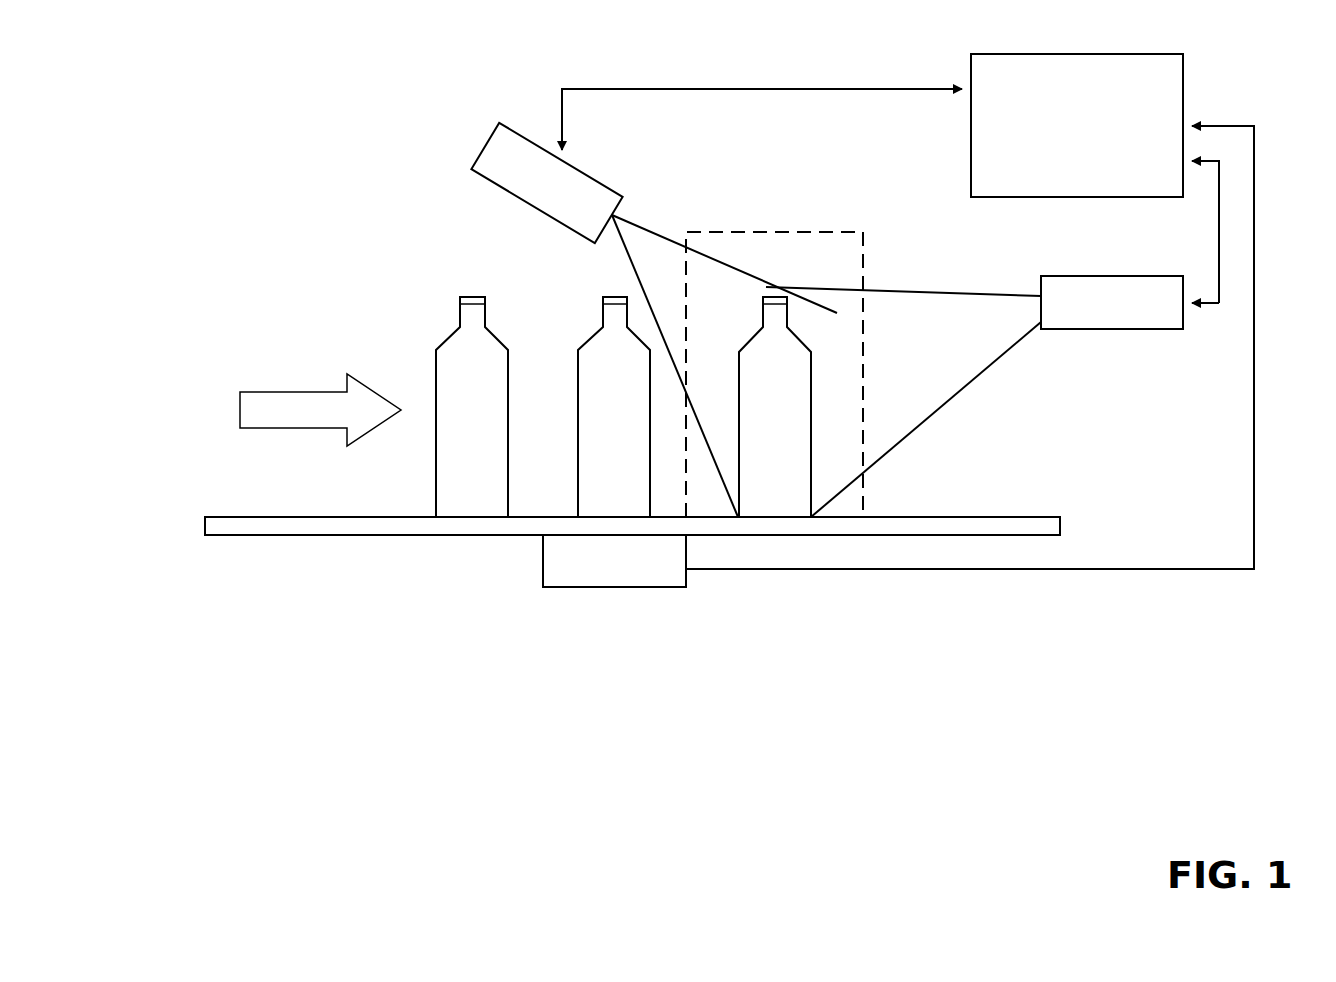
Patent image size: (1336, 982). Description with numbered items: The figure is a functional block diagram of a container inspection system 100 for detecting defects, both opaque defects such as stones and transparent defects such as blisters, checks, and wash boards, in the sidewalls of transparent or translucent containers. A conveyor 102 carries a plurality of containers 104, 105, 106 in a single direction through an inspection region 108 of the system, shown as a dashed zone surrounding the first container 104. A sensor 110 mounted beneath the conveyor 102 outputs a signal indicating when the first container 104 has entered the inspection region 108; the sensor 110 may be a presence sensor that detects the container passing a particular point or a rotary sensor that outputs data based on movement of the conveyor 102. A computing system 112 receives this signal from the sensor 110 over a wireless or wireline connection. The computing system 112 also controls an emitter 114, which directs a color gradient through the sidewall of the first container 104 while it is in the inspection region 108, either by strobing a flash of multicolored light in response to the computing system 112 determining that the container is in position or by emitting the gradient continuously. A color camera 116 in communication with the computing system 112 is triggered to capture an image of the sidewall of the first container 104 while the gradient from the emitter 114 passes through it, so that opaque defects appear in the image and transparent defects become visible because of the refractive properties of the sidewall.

The container inspection system 100 is at (215, 222).
The conveyor 102 is at (258, 516).
The first container 104 is at (775, 407).
The container 105 is at (614, 407).
The container 106 is at (472, 407).
The inspection region 108 is at (807, 231).
The sensor 110 is at (578, 588).
The computing system 112 is at (1077, 125).
The emitter 114 is at (490, 142).
The color camera 116 is at (1087, 275).